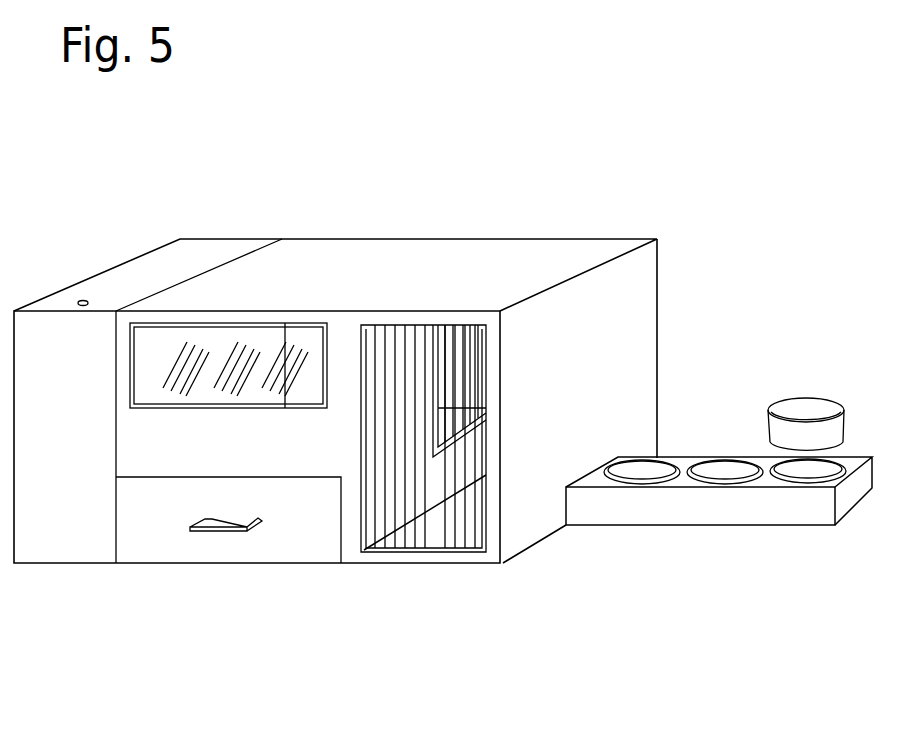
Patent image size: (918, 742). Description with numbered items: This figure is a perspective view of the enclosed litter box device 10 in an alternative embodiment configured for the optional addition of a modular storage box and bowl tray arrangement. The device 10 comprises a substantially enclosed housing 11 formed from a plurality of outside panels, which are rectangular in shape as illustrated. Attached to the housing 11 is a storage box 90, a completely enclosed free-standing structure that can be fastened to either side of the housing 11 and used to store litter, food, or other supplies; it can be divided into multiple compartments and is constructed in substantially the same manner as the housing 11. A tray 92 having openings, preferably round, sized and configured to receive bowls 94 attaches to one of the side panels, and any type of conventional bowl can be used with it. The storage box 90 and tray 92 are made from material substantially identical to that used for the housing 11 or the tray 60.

The enclosed litter box device 10 is at (398, 217).
The housing 11 is at (577, 217).
The storage box 90 is at (220, 250).
The tray 60 is at (290, 578).
The tray 92 is at (615, 502).
The bowls 94 is at (808, 438).